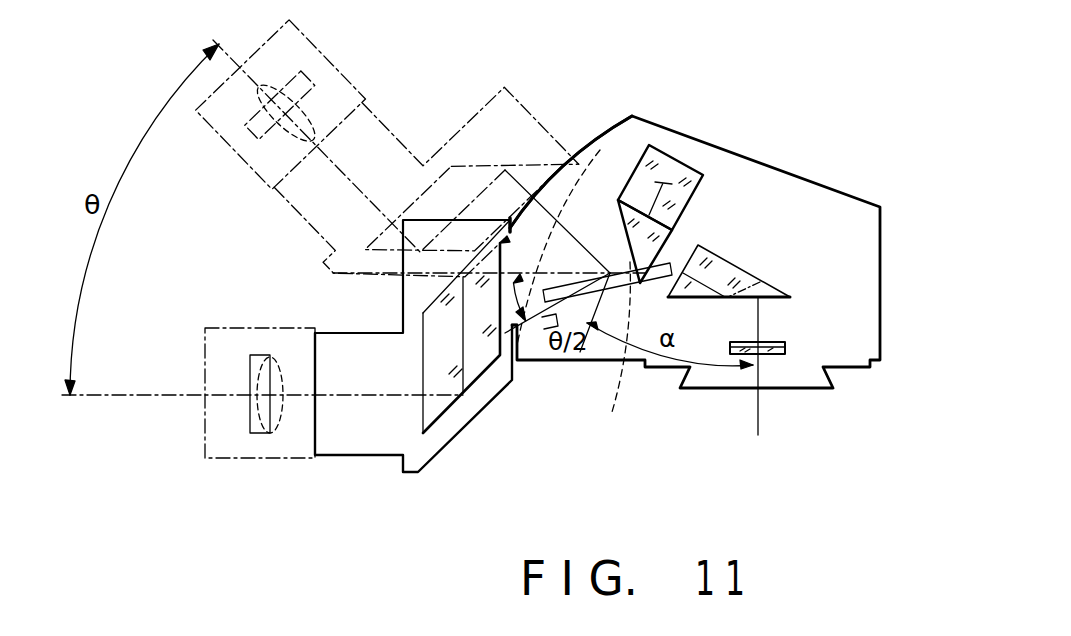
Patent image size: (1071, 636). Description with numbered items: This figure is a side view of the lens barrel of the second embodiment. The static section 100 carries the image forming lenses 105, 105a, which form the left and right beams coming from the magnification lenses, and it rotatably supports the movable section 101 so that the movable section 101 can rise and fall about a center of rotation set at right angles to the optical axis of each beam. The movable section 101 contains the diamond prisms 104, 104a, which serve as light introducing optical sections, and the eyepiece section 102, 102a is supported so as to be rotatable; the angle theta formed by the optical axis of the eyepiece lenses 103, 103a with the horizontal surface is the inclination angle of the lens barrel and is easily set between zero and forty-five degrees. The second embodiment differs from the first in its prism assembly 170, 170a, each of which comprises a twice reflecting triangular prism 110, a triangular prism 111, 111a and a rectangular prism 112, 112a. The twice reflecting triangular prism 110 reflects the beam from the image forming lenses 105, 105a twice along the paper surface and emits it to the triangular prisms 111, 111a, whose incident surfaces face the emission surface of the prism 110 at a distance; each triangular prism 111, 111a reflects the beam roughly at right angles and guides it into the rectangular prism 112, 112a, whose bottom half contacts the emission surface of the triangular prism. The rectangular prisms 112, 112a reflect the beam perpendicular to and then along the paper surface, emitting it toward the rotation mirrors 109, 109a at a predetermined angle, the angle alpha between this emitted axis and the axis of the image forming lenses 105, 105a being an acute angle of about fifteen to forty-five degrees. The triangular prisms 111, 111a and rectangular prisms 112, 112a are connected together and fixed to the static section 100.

The static section 100 is at (863, 282).
The movable section 101 is at (565, 165).
The eyepiece section 102 is at (426, 288).
The eyepiece section 102a is at (470, 122).
The eyepiece lens 103 is at (338, 262).
The eyepiece lens 103a is at (305, 80).
The diamond prism 104 is at (475, 323).
The diamond prism 104a is at (473, 367).
The image forming lens 105 is at (817, 376).
The image forming lens 105a is at (776, 357).
The rotation mirror 109 is at (612, 293).
The rotation mirror 109a is at (612, 293).
The twice reflecting triangular prism 110 is at (743, 272).
The triangular prism 111 is at (709, 241).
The triangular prism 111a is at (672, 237).
The rectangular prism 112 is at (720, 158).
The rectangular prism 112a is at (673, 170).
The prism assembly 170 is at (720, 156).
The prism assembly 170a is at (720, 156).